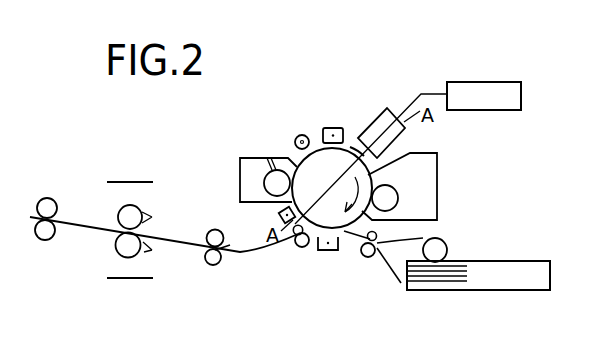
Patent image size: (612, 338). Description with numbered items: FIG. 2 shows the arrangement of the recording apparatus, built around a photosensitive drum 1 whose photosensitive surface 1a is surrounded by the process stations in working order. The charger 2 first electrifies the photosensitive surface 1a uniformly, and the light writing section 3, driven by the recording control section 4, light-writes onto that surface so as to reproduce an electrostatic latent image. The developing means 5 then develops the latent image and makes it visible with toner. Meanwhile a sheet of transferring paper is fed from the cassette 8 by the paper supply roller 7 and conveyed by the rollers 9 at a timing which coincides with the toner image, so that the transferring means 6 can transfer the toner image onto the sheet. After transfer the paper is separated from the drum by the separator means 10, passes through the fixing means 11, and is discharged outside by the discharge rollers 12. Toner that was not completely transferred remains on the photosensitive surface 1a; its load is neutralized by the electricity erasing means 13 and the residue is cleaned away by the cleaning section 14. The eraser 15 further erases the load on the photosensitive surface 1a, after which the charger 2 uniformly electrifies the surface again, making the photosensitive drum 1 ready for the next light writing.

The photosensitive drum 1 is at (320, 158).
The photosensitive surface 1a is at (350, 147).
The charger 2 is at (332, 127).
The light writing section 3 is at (405, 127).
The recording control section 4 is at (515, 82).
The developing means 5 is at (437, 178).
The transferring means 6 is at (328, 253).
The paper supply roller 7 is at (445, 243).
The cassette 8 is at (510, 261).
The rollers 9 is at (367, 258).
The separator means 10 is at (302, 250).
The fixing means 11 is at (150, 182).
The discharge rollers 12 is at (57, 199).
The electricity erasing means 13 is at (278, 213).
The cleaning section 14 is at (247, 157).
The eraser 15 is at (296, 135).